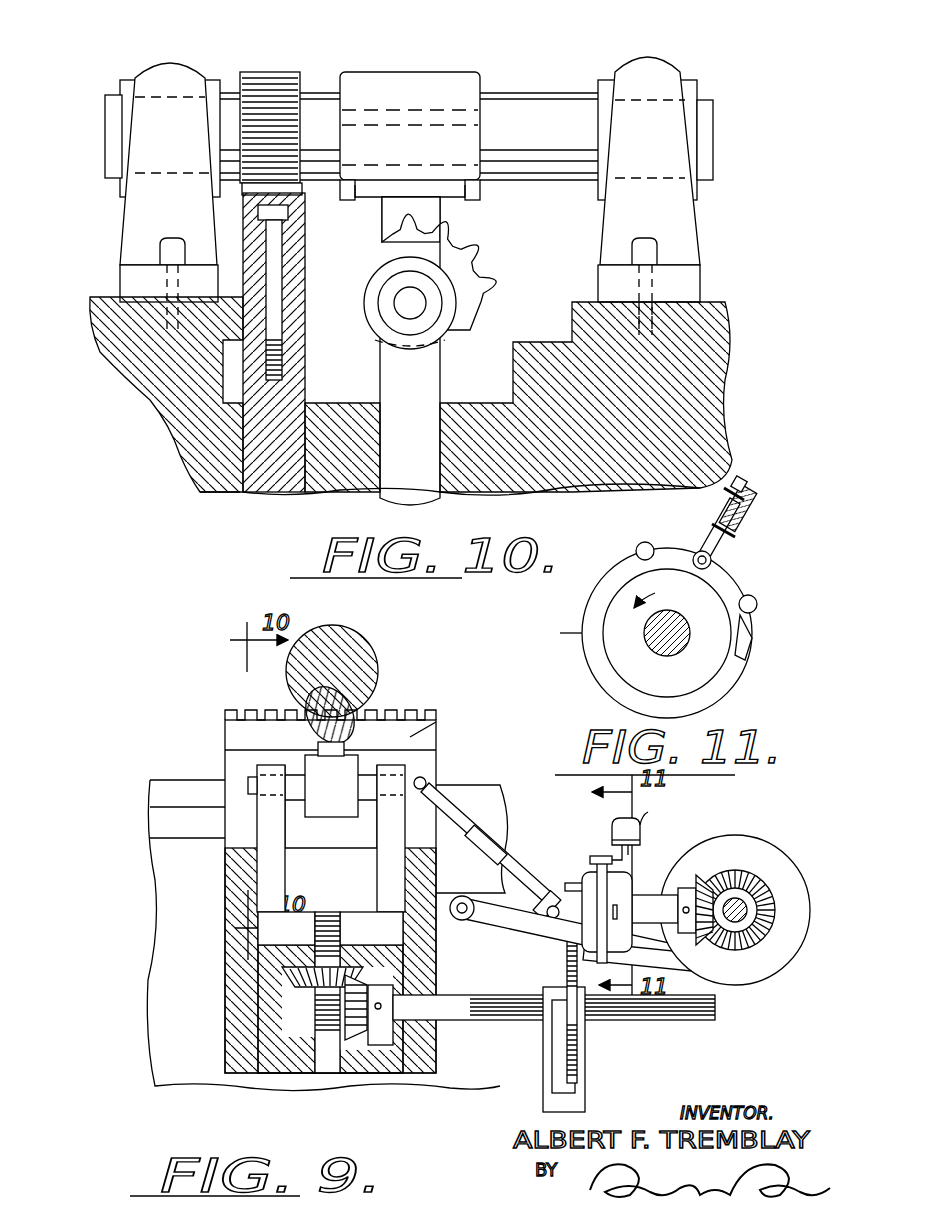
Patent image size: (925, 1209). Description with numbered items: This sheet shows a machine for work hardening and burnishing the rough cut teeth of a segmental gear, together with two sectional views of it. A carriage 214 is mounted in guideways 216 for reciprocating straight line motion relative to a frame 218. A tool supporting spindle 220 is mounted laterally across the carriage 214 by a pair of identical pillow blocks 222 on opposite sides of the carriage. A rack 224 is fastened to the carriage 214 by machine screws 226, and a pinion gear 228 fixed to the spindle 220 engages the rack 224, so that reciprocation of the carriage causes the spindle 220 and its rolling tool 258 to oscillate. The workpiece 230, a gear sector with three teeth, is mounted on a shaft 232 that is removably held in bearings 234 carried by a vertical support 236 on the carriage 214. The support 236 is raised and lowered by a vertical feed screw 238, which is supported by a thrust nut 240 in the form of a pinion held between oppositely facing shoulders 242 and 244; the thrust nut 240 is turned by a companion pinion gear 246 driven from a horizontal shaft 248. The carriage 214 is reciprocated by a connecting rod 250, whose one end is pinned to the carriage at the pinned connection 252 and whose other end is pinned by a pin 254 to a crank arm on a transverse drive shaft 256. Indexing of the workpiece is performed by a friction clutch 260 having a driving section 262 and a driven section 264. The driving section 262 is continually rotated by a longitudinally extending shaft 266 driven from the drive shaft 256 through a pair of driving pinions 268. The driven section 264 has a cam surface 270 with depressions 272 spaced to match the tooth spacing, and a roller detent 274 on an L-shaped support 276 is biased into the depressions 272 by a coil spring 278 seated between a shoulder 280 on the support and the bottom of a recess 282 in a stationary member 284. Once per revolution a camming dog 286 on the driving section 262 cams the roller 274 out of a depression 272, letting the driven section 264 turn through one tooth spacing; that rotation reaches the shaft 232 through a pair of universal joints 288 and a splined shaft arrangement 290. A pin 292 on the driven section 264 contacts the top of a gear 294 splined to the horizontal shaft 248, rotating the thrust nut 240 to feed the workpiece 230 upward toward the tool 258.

In FIG. 10, the carriage 214 is at (235, 470).
In FIG. 9, the carriage 214 is at (240, 962).
In FIG. 10, the guideways 216 is at (228, 398).
In FIG. 9, the guideways 216 is at (150, 824).
In FIG. 10, the frame 218 is at (90, 345).
In FIG. 10, the tool supporting spindle 220 is at (480, 88).
In FIG. 9, the tool supporting spindle 220 is at (380, 668).
In FIG. 10, the pillow blocks 222 is at (172, 58).
In FIG. 10, the rack 224 is at (243, 225).
In FIG. 9, the rack 224 is at (425, 720).
In FIG. 10, the machine screws 226 is at (268, 284).
In FIG. 10, the pinion gear 228 is at (290, 72).
In FIG. 10, the segmental gear workpiece 230 is at (482, 278).
In FIG. 9, the segmental gear workpiece 230 is at (360, 748).
In FIG. 10, the shaft 232 is at (382, 345).
In FIG. 9, the shaft 232 is at (355, 756).
In FIG. 9, the bearings 234 is at (268, 746).
In FIG. 10, the vertical support 236 is at (445, 345).
In FIG. 9, the vertical support 236 is at (258, 870).
In FIG. 9, the vertical feed screw 238 is at (310, 1070).
In FIG. 9, the thrust nut 240 is at (316, 1020).
In FIG. 9, the shoulder 242 is at (285, 978).
In FIG. 9, the shoulder 244 is at (305, 985).
In FIG. 9, the companion pinion gear 246 is at (352, 1040).
In FIG. 9, the horizontal shaft 248 is at (468, 1022).
In FIG. 9, the connecting rod 250 is at (705, 978).
In FIG. 9, the lever 252 is at (464, 918).
In FIG. 9, the pin 254 is at (725, 975).
In FIG. 9, the transverse drive shaft 256 is at (735, 895).
In FIG. 10, the rolling tool 258 is at (452, 220).
In FIG. 9, the rolling tool 258 is at (290, 727).
In FIG. 9, the friction clutch 260 is at (638, 842).
In FIG. 9, the driving section 262 is at (632, 880).
In FIG. 9, the driven section 264 is at (585, 878).
In FIG. 9, the longitudinally extending shaft 266 is at (718, 885).
In FIG. 9, the driving pinions 268 is at (705, 945).
In FIG. 11, the cam surface 270 is at (582, 633).
In FIG. 9, the cam surface 270 is at (575, 942).
In FIG. 11, the depressions 272 is at (658, 553).
In FIG. 11, the roller detent 274 is at (694, 552).
In FIG. 11, the L-shaped support 276 is at (740, 490).
In FIG. 11, the coil spring 278 is at (745, 520).
In FIG. 11, the shoulder 280 is at (725, 556).
In FIG. 11, the recess 282 is at (710, 522).
In FIG. 11, the stationary member 284 is at (746, 508).
In FIG. 9, the stationary member 284 is at (650, 842).
In FIG. 11, the camming dog 286 is at (745, 665).
In FIG. 9, the camming dog 286 is at (620, 912).
In FIG. 9, the universal joints 288 is at (455, 790).
In FIG. 9, the splined shaft arrangement 290 is at (503, 840).
In FIG. 9, the pin 292 is at (545, 898).
In FIG. 9, the gear 294 is at (582, 1040).